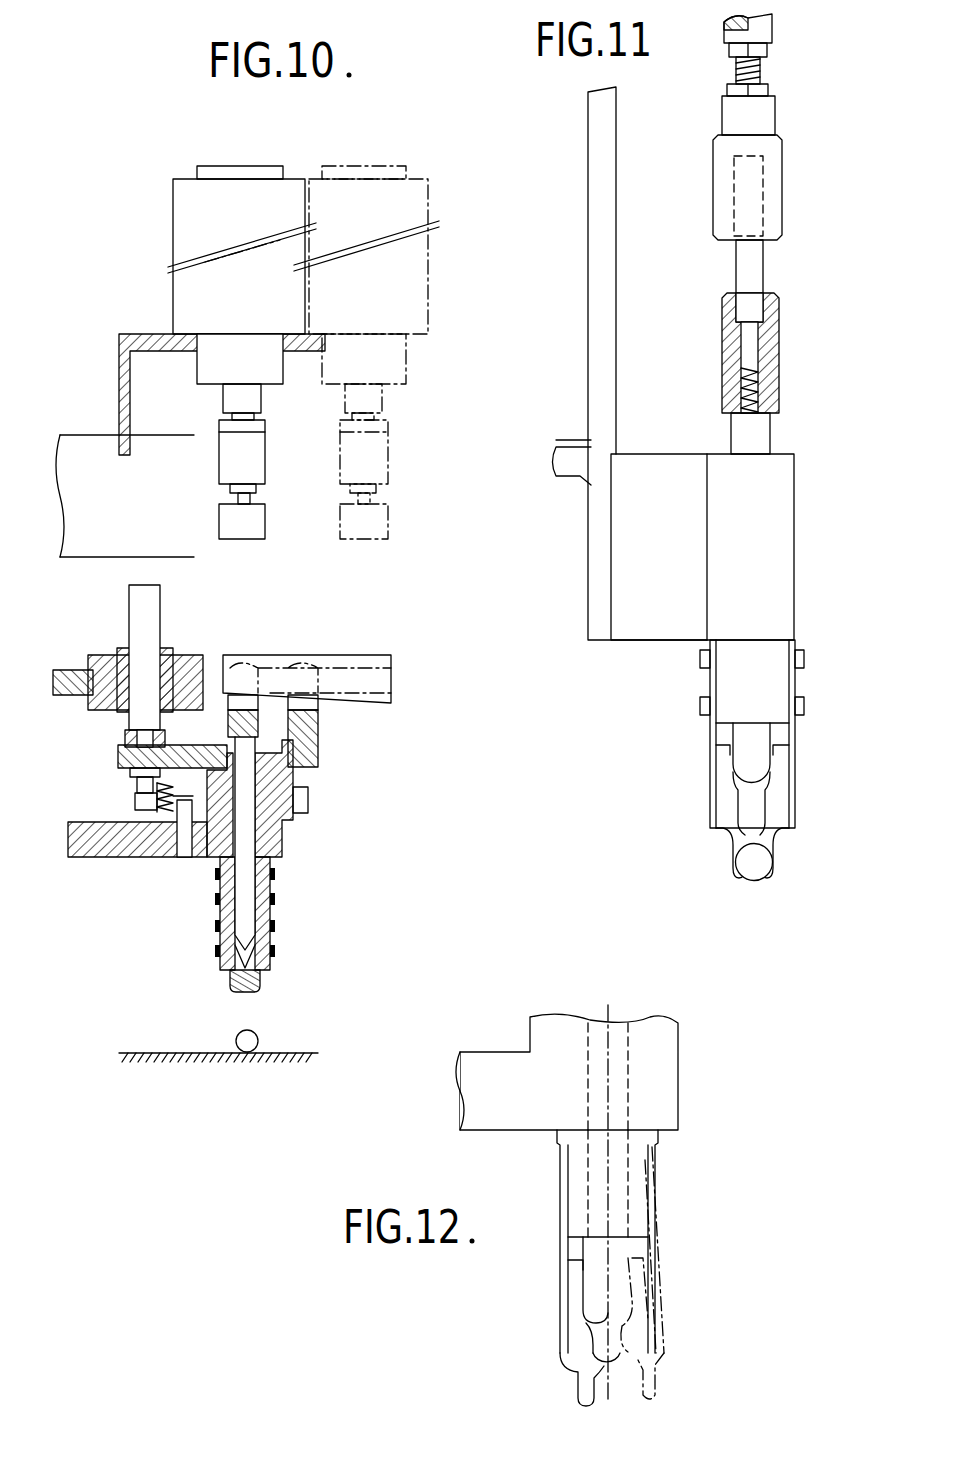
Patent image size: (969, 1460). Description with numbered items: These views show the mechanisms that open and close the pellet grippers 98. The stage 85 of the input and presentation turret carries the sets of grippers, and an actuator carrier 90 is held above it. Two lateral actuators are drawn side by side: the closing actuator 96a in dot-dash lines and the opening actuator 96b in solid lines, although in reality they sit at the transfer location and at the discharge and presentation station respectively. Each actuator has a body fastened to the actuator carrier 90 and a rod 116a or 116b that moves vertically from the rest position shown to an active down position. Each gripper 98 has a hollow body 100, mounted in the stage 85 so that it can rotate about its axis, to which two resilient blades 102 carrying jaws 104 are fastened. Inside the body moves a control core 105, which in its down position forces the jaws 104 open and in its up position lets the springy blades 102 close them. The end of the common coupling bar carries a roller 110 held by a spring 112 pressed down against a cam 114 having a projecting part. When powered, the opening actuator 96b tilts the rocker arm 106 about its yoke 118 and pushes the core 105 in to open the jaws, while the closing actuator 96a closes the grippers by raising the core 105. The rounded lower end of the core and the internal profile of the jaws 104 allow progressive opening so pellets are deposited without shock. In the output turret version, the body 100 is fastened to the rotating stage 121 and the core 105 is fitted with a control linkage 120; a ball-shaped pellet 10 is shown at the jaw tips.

In FIG. 10, the ball 10 is at (258, 1032).
In FIG. 11, the ball 10 is at (758, 858).
In FIG. 10, the stage 85 is at (92, 834).
In FIG. 10, the actuator carrier 90 is at (111, 460).
In FIG. 10, the closing actuator 96a is at (378, 226).
In FIG. 10, the opening actuator 96b is at (212, 292).
In FIG. 11, the gripper 98 is at (740, 664).
In FIG. 10, the gripper body 100 is at (284, 840).
In FIG. 11, the gripper body 100 is at (763, 483).
In FIG. 12, the gripper body 100 is at (663, 1057).
In FIG. 10, the resilient blades 102 is at (221, 919).
In FIG. 11, the resilient blades 102 is at (793, 734).
In FIG. 12, the resilient blades 102 is at (563, 1177).
In FIG. 10, the jaws 104 is at (227, 969).
In FIG. 11, the jaws 104 is at (780, 814).
In FIG. 12, the jaws 104 is at (647, 1378).
In FIG. 10, the control core 105 is at (246, 872).
In FIG. 11, the control core 105 is at (752, 756).
In FIG. 12, the control core 105 is at (620, 1292).
In FIG. 10, the rocker arm 106 is at (369, 703).
In FIG. 10, the roller 110 is at (100, 653).
In FIG. 10, the spring 112 is at (159, 816).
In FIG. 10, the cam 114 is at (70, 697).
In FIG. 10, the actuator rod 116a is at (378, 393).
In FIG. 10, the actuator rod 116b is at (249, 396).
In FIG. 10, the yoke 118 is at (304, 709).
In FIG. 11, the control linkage 120 is at (734, 274).
In FIG. 11, the rotating stage 121 is at (600, 538).